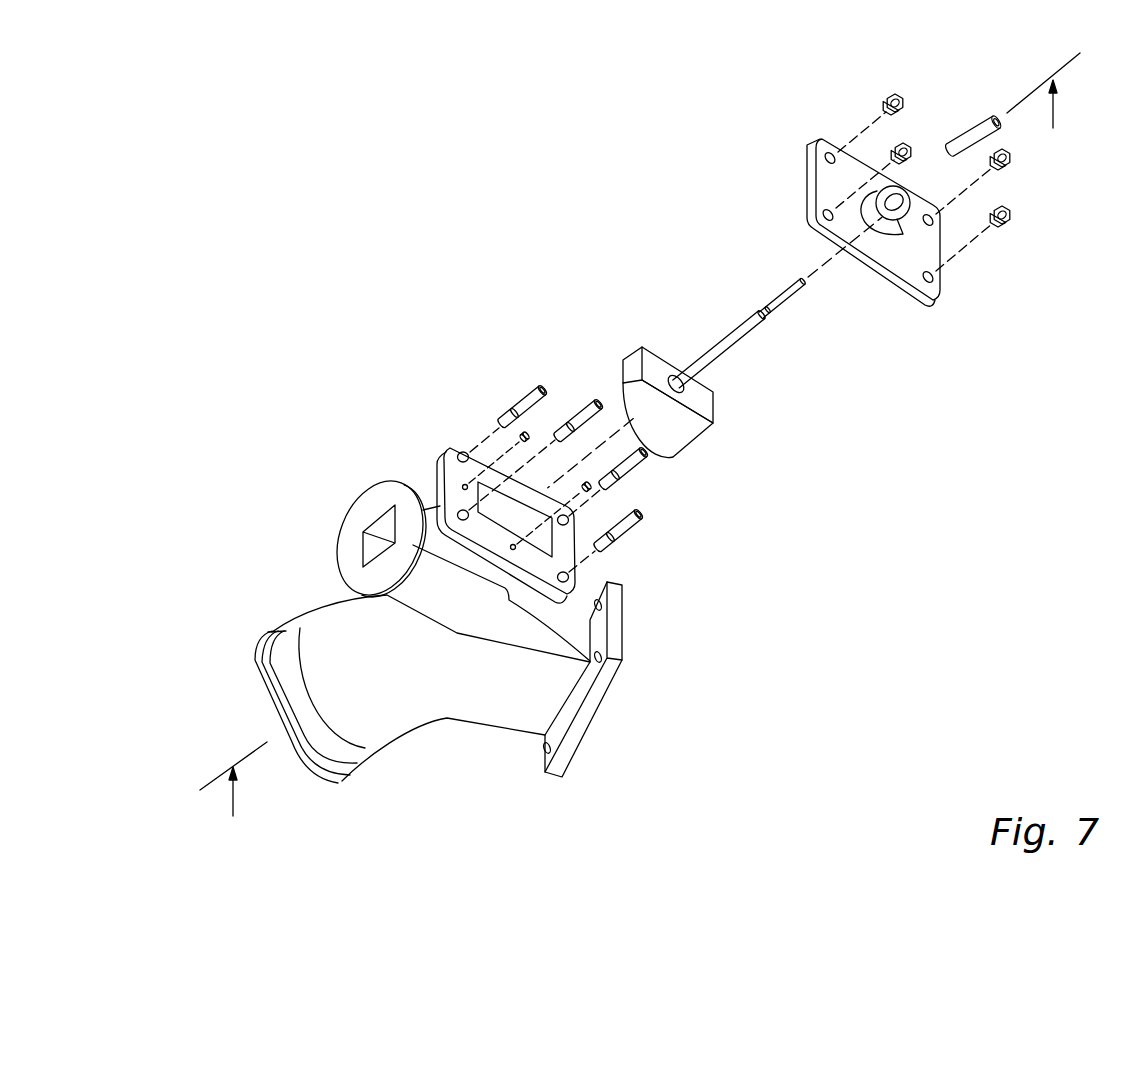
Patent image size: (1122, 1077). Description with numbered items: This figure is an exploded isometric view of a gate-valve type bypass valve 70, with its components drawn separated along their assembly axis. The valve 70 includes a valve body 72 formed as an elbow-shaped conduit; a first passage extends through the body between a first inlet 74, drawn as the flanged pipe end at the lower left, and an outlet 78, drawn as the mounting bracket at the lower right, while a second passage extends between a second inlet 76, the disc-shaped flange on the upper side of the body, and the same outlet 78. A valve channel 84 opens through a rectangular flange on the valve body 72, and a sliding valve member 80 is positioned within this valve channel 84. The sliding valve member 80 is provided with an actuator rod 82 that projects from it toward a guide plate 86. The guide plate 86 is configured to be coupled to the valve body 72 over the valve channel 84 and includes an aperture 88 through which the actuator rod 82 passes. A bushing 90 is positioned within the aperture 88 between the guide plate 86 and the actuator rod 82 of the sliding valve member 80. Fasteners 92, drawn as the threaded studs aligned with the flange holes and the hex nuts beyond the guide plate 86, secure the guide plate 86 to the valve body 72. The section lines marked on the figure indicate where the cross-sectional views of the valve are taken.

The bypass valve 70 is at (392, 188).
The valve body 72 is at (333, 628).
The first inlet 74 is at (232, 682).
The second inlet 76 is at (382, 527).
The outlet 78 is at (622, 714).
The sliding valve member 80 is at (640, 403).
The actuator rod 82 is at (715, 350).
The valve channel 84 is at (495, 506).
The guide plate 86 is at (830, 185).
The aperture 88 is at (890, 220).
The bushing 90 is at (964, 133).
The fasteners 92 is at (1026, 248).